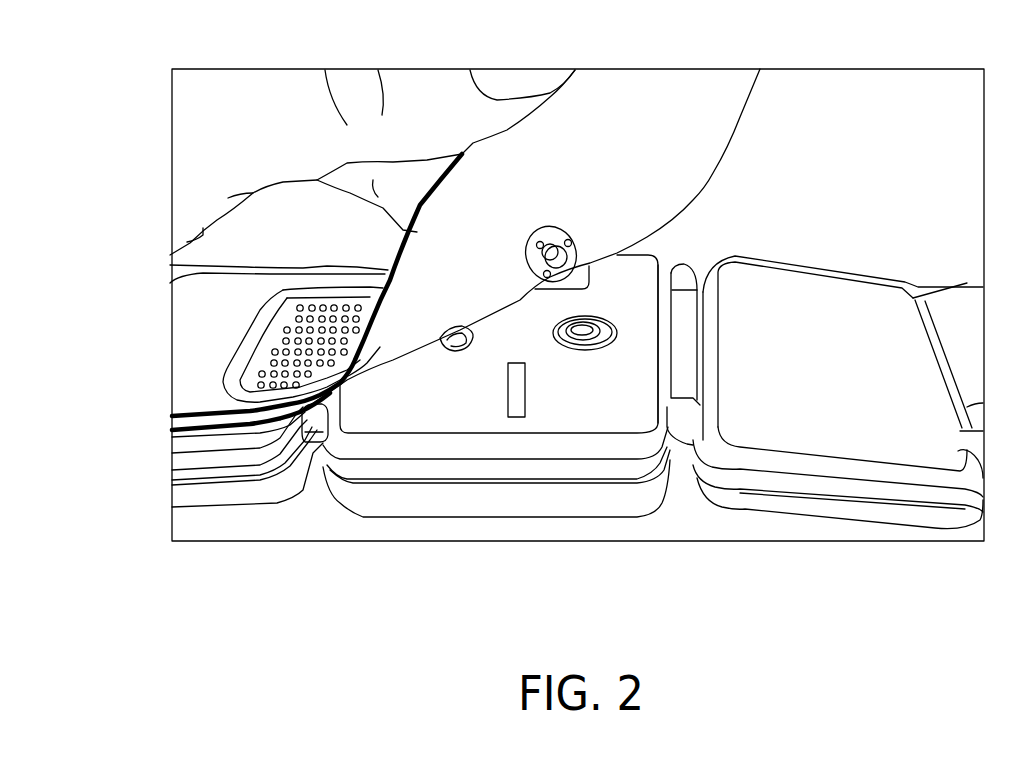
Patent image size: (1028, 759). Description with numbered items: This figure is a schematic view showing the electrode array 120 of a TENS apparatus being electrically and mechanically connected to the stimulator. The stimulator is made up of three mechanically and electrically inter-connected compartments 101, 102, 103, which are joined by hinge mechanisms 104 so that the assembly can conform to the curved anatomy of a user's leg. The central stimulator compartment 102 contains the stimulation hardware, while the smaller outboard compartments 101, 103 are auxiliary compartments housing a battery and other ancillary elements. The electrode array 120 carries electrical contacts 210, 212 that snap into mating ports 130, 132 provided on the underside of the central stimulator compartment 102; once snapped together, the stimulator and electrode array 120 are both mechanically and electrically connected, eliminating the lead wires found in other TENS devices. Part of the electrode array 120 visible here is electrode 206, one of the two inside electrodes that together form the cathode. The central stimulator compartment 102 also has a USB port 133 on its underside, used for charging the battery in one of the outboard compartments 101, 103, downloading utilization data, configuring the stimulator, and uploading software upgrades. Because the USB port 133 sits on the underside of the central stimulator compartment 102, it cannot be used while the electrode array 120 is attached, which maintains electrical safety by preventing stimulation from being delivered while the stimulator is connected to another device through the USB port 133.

The compartment 101 is at (840, 330).
The central stimulator compartment 102 is at (378, 505).
The compartment 103 is at (205, 457).
The hinge mechanism 104 is at (318, 423).
The electrode array 120 is at (283, 305).
The mating port 130 is at (455, 368).
The mating port 132 is at (585, 340).
The USB port 133 is at (518, 417).
The electrode 206 is at (196, 343).
The electrical contact 210 is at (455, 330).
The electrical contact 212 is at (557, 237).